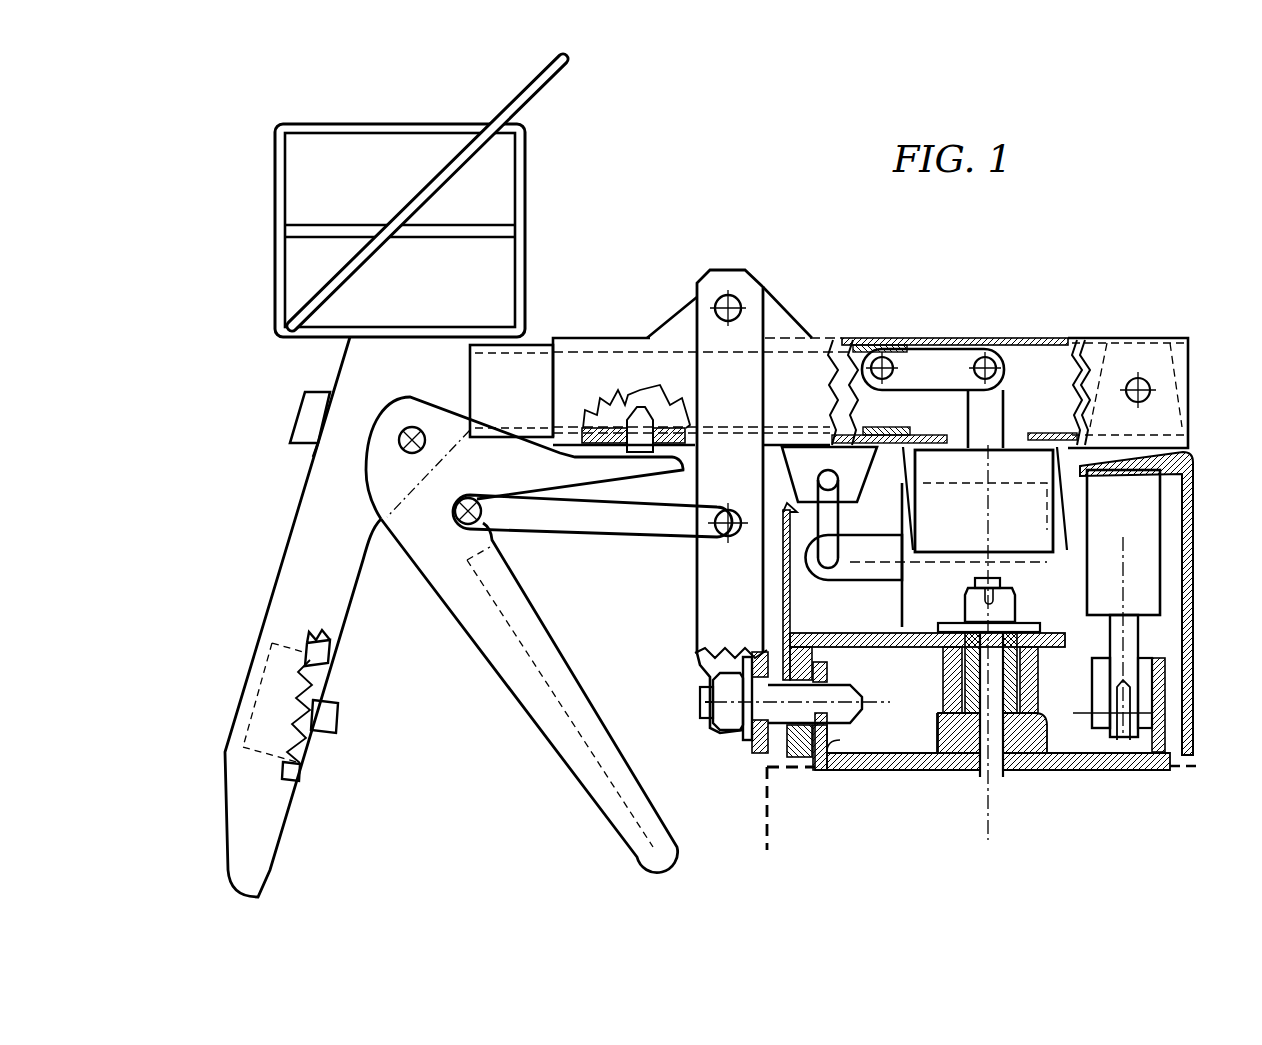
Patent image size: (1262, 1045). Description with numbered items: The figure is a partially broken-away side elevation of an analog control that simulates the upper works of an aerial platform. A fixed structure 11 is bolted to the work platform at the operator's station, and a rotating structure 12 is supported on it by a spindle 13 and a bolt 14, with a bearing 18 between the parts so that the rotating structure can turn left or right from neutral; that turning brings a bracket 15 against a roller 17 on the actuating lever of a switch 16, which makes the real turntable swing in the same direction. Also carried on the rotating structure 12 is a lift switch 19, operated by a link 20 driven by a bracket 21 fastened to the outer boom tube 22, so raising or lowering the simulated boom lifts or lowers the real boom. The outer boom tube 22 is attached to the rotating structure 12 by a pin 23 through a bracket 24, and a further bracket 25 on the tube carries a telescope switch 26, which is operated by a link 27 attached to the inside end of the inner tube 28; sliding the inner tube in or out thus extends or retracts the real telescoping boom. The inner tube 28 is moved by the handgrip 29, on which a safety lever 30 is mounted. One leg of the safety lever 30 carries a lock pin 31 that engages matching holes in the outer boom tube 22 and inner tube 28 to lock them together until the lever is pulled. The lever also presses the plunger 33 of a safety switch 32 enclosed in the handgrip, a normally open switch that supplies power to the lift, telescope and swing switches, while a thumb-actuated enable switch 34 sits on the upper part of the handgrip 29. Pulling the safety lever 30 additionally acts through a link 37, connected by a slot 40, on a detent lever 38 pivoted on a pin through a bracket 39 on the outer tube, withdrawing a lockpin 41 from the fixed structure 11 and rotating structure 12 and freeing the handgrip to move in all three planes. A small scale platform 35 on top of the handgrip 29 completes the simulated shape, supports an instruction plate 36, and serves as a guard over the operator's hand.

The fixed structure 11 is at (835, 690).
The rotating structure 12 is at (806, 633).
The spindle 13 is at (967, 688).
The bolt 14 is at (985, 775).
The bracket 15 is at (1090, 693).
The switch 16 is at (1087, 560).
The roller 17 is at (1120, 743).
The bearing 18 is at (960, 653).
The lift switch 19 is at (901, 630).
The link 20 is at (838, 525).
The bracket 21 is at (866, 468).
The outer boom tube 22 is at (550, 410).
The pin 23 is at (1130, 378).
The bracket 24 is at (1190, 365).
The bracket 25 is at (1067, 512).
The telescope switch 26 is at (1017, 437).
The link 27 is at (947, 390).
The inner tube 28 is at (538, 347).
The handgrip 29 is at (292, 530).
The safety lever 30 is at (633, 480).
The lock pin 31 is at (627, 388).
The safety switch 32 is at (330, 648).
The plunger 33 is at (340, 718).
The enable switch 34 is at (300, 420).
The platform 35 is at (528, 198).
The instruction plate 36 is at (548, 78).
The link 37 is at (578, 532).
The detent lever 38 is at (697, 637).
The bracket 39 is at (797, 318).
The slot 40 is at (745, 522).
The lockpin 41 is at (845, 725).